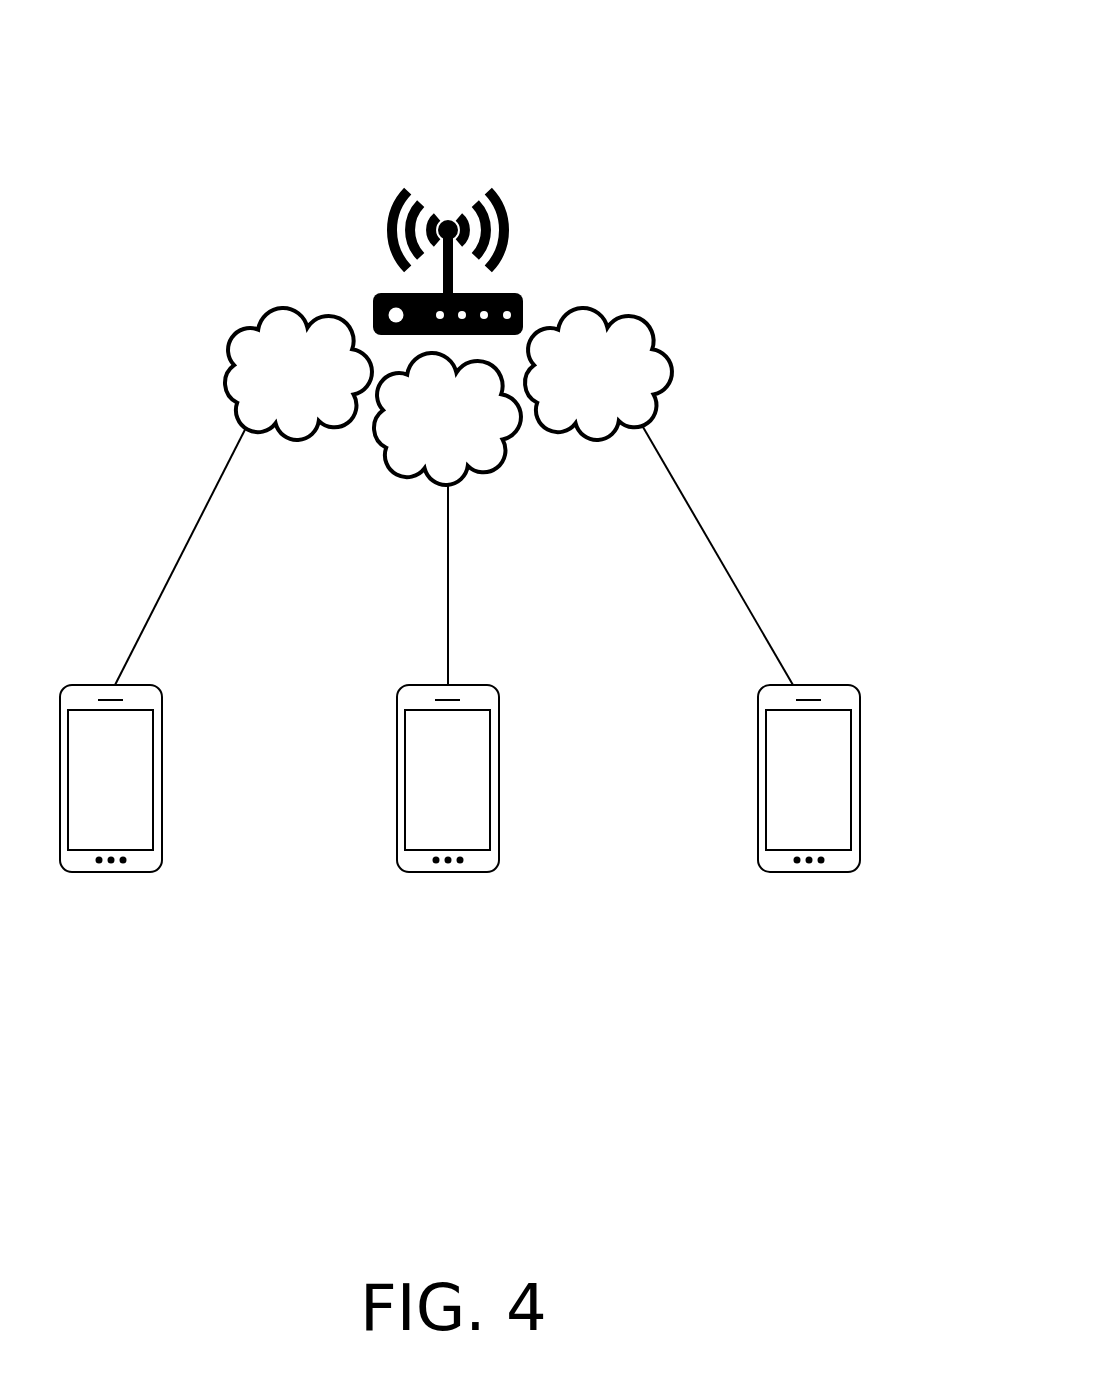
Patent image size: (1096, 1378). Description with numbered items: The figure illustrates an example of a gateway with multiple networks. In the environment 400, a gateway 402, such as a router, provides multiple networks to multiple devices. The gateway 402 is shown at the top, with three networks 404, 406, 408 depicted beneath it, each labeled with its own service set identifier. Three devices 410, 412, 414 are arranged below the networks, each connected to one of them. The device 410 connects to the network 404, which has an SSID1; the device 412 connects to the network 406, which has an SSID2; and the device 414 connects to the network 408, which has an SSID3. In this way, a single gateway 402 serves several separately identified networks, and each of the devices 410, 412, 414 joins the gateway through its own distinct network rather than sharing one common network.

The environment 400 is at (784, 118).
The gateway 402 is at (467, 199).
The network 404 is at (319, 417).
The network 406 is at (469, 464).
The network 408 is at (619, 417).
The device 410 is at (133, 789).
The device 412 is at (470, 789).
The device 414 is at (831, 789).